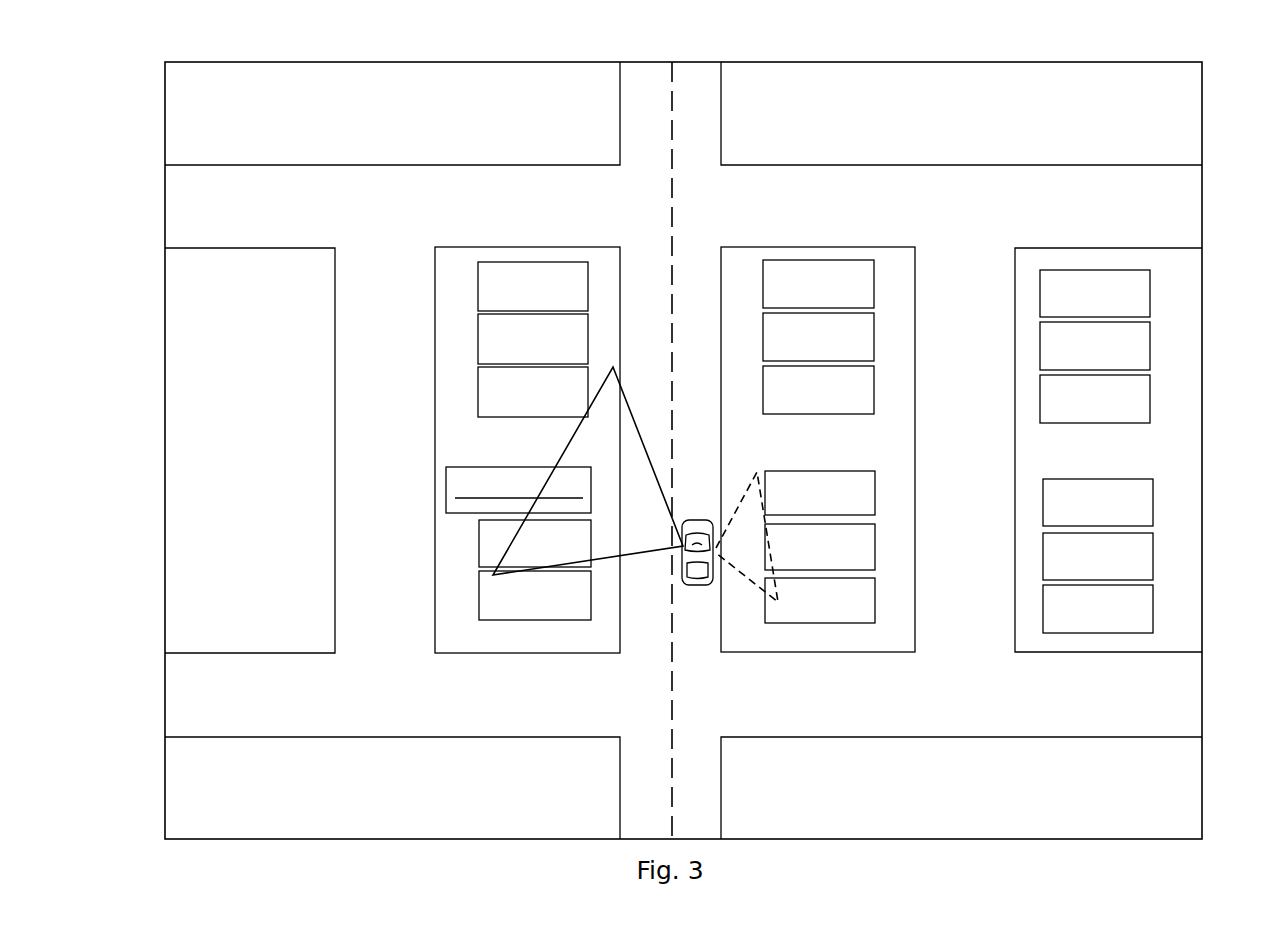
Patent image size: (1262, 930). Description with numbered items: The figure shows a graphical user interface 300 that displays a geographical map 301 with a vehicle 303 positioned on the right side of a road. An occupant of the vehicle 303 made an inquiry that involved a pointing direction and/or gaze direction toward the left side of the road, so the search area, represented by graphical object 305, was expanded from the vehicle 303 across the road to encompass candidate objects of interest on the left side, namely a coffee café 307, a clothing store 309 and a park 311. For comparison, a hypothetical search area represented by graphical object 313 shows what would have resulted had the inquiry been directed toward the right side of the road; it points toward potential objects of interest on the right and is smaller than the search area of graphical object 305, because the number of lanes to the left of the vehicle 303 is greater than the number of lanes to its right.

The graphical user interface 300 is at (163, 105).
The geographical map 301 is at (1183, 232).
The vehicle 303 is at (697, 585).
The graphical object 305 is at (632, 413).
The coffee café 307 is at (446, 487).
The clothing store 309 is at (478, 556).
The park 311 is at (450, 425).
The graphical object 313 is at (742, 490).